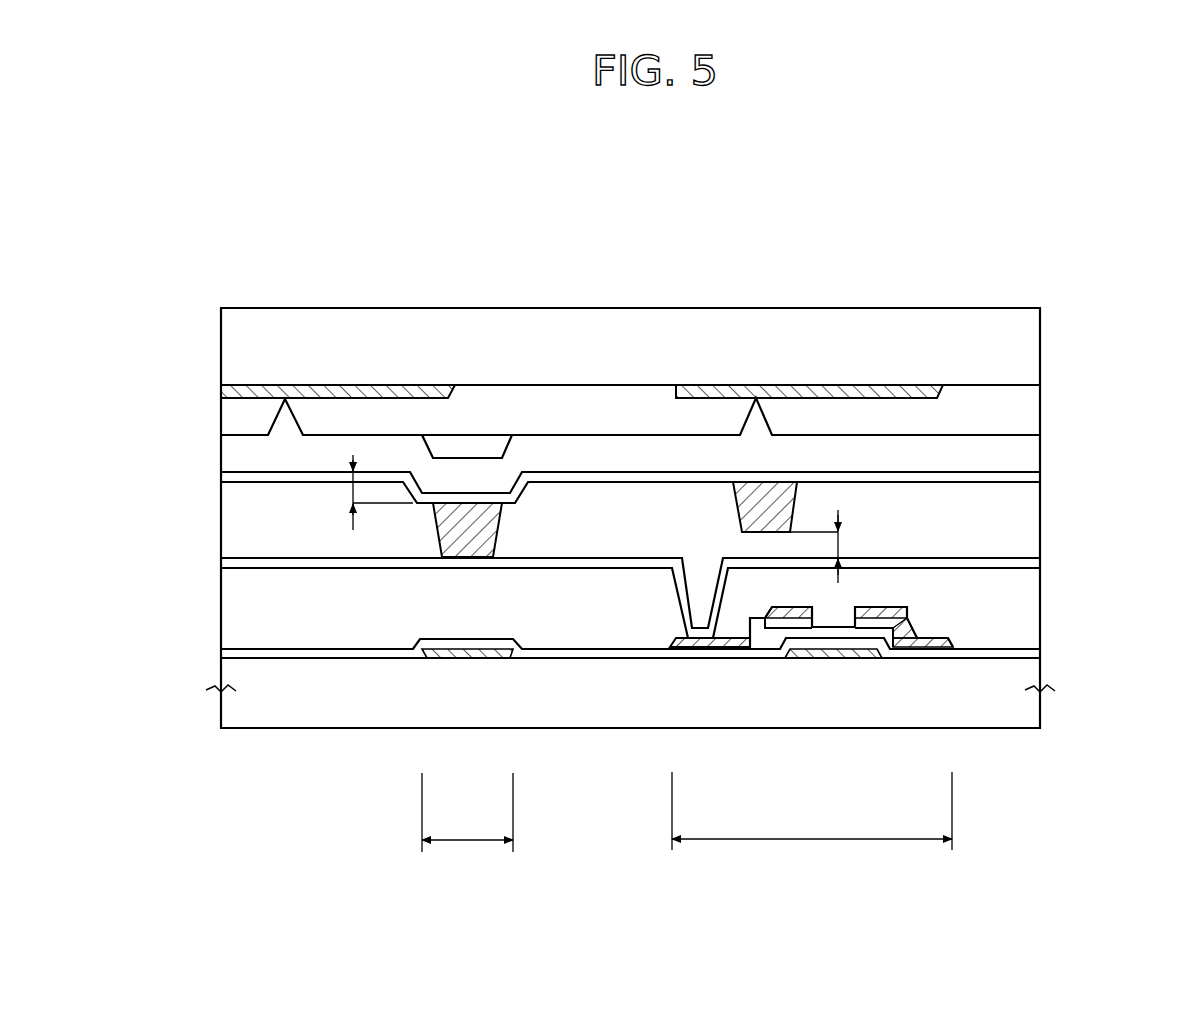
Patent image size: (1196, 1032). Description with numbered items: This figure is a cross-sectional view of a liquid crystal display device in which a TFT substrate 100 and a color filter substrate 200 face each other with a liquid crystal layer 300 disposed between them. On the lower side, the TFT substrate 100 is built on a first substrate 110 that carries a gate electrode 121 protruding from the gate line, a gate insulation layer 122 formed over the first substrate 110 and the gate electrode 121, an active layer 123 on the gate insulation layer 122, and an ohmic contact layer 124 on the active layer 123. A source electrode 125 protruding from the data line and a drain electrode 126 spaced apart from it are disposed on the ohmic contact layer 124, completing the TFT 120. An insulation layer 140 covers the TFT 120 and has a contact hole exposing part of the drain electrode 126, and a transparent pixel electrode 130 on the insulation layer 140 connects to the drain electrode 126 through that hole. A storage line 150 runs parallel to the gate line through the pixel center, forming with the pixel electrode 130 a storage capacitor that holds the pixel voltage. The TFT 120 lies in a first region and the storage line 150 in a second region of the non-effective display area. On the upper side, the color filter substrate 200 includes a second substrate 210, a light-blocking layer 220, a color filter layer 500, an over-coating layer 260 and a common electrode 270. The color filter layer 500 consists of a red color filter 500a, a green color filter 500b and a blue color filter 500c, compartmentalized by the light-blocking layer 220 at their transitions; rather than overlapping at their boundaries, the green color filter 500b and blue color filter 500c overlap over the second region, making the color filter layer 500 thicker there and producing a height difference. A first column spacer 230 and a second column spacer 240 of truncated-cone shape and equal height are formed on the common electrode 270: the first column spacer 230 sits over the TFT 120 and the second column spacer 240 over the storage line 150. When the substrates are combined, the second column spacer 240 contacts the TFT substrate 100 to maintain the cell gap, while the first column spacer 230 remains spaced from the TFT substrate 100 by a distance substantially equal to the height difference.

The color filter layer 500 is at (208, 412).
The red color filter 500a is at (255, 407).
The green color filter 500b is at (562, 393).
The blue color filter 500c is at (848, 408).
The color filter substrate 200 is at (696, 418).
The second substrate 210 is at (1040, 344).
The light-blocking layer 220 is at (937, 393).
The over-coating layer 260 is at (1040, 448).
The common electrode 270 is at (667, 483).
The liquid crystal layer 300 is at (719, 519).
The second column spacer 240 is at (493, 515).
The first column spacer 230 is at (790, 493).
The TFT substrate 100 is at (696, 700).
The first substrate 110 is at (1040, 668).
The pixel electrode 130 is at (1040, 556).
The insulation layer 140 is at (1040, 603).
The storage line 150 is at (468, 655).
The TFT 120 is at (630, 707).
The gate electrode 121 is at (837, 659).
The gate insulation layer 122 is at (781, 651).
The active layer 123 is at (757, 648).
The ohmic contact layer 124 is at (880, 612).
The source electrode 125 is at (923, 702).
The drain electrode 126 is at (700, 648).